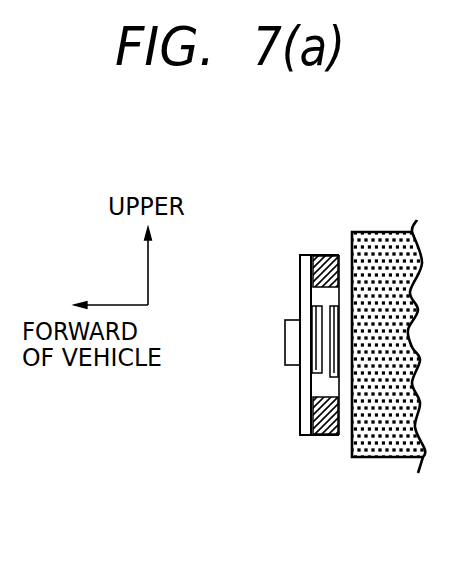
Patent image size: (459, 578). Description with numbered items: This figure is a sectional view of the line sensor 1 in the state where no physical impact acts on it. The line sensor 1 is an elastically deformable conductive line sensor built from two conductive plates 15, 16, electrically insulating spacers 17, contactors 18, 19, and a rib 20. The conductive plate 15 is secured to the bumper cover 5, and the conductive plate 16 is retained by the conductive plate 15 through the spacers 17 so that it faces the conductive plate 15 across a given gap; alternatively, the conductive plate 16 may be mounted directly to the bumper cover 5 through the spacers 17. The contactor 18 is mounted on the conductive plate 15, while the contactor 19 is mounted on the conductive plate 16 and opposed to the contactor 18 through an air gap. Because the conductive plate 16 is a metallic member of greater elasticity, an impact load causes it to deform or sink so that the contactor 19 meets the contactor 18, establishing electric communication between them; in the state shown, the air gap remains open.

The line sensor 1 is at (345, 186).
The bumper cover 5 is at (390, 458).
The conductive plate 15 is at (340, 437).
The conductive plate 16 is at (306, 254).
The spacer 17 is at (313, 269).
The contactor 18 is at (333, 374).
The contactor 19 is at (320, 345).
The rib 20 is at (288, 323).